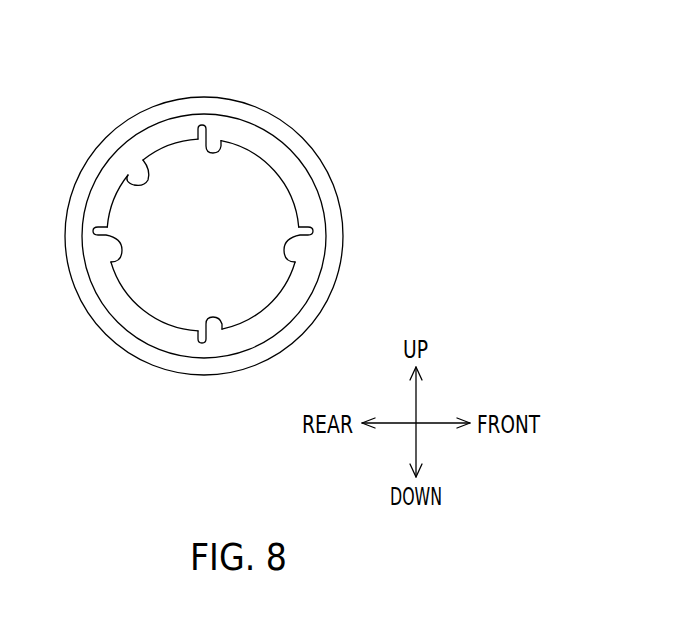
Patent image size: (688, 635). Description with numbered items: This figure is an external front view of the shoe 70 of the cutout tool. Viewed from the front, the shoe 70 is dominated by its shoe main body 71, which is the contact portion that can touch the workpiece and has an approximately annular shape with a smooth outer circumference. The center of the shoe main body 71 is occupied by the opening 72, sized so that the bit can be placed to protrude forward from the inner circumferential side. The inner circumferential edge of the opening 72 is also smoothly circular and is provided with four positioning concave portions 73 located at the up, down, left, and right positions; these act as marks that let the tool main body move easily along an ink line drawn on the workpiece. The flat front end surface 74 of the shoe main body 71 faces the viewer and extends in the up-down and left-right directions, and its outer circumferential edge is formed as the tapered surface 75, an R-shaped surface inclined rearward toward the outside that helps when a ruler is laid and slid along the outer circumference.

The shoe 70 is at (221, 231).
The shoe main body 71 is at (313, 98).
The opening 72 is at (142, 158).
The positioning concave portions 73 is at (229, 141).
The front end surface 74 is at (300, 177).
The tapered surface 75 is at (334, 215).